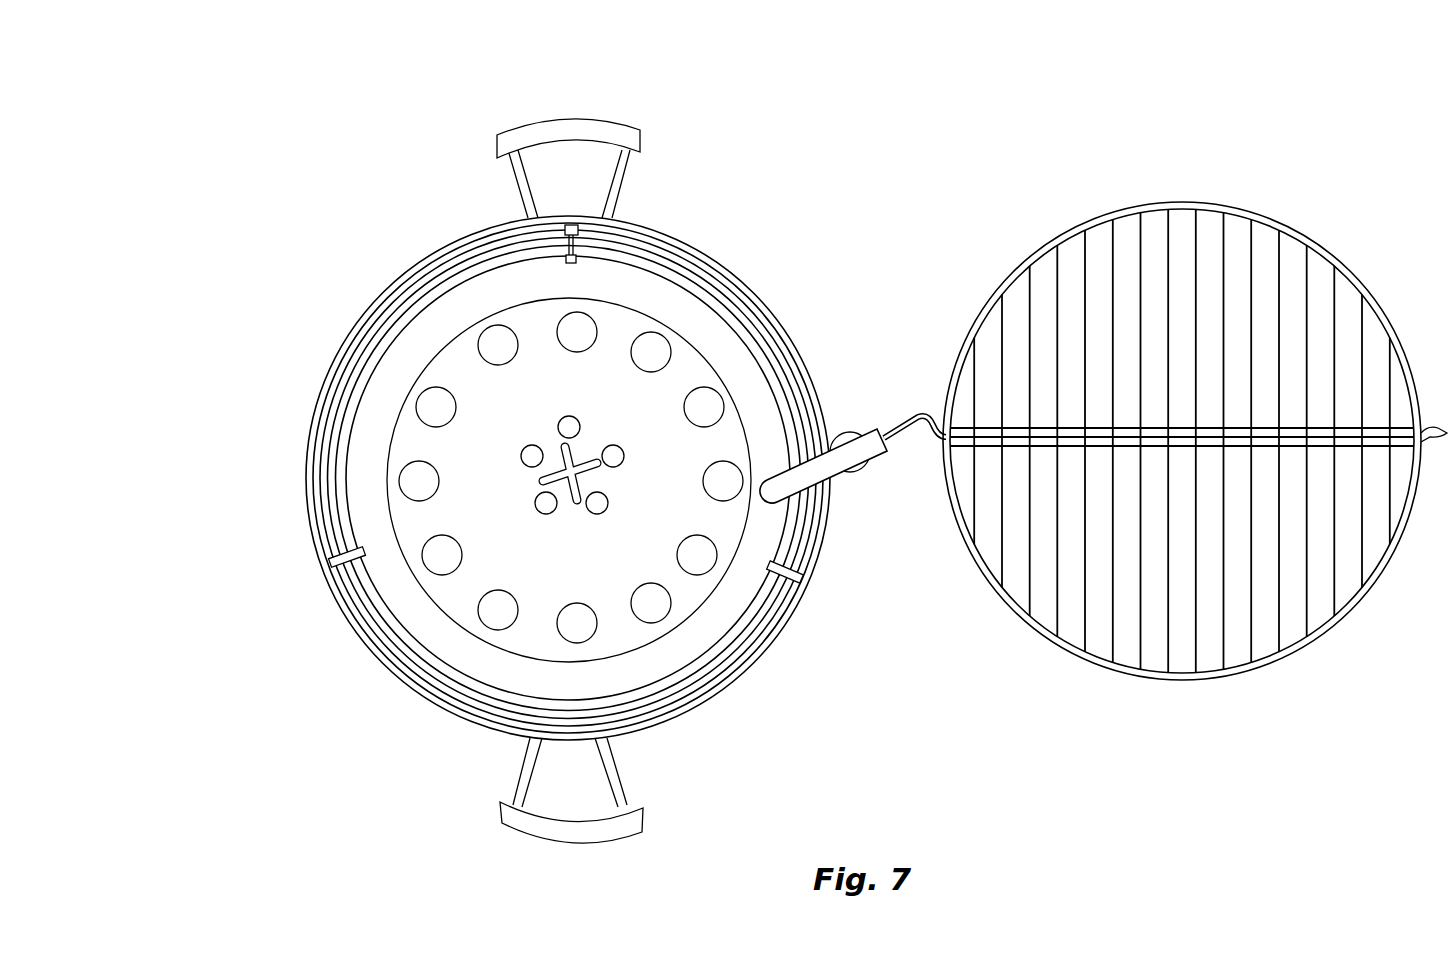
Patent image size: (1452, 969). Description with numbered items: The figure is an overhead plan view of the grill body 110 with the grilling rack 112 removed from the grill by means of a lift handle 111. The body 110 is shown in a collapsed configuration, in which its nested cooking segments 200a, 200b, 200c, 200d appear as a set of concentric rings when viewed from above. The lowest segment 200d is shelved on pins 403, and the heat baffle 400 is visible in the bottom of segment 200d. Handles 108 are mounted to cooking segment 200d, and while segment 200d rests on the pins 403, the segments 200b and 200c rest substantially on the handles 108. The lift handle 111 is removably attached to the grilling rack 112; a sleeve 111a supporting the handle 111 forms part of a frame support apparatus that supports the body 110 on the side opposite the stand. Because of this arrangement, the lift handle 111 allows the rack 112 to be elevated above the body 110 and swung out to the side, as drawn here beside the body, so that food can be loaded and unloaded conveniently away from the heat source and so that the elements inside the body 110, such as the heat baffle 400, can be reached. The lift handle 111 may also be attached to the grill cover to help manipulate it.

The handles 108 is at (508, 198).
The body 110 is at (230, 272).
The segment 200a is at (648, 227).
The segment 200b is at (698, 257).
The segment 200c is at (445, 277).
The cooking segment 200d is at (381, 343).
The heat baffle 400 is at (551, 580).
The pins 403 is at (330, 563).
The lift handle 111 is at (859, 438).
The sleeve 111a is at (850, 480).
The grilling rack 112 is at (1185, 198).